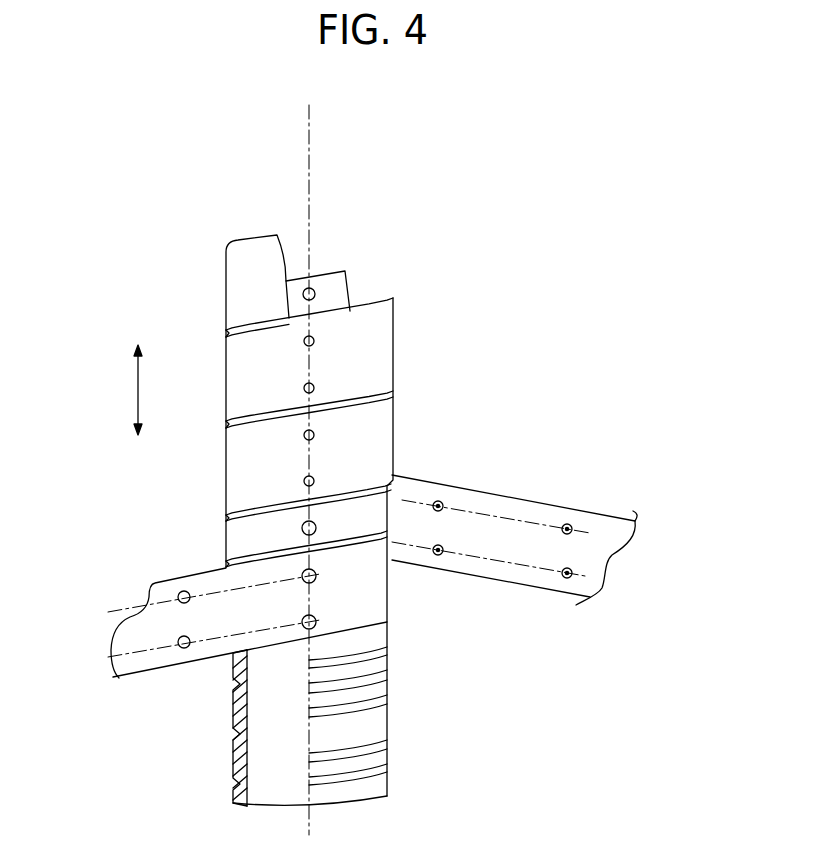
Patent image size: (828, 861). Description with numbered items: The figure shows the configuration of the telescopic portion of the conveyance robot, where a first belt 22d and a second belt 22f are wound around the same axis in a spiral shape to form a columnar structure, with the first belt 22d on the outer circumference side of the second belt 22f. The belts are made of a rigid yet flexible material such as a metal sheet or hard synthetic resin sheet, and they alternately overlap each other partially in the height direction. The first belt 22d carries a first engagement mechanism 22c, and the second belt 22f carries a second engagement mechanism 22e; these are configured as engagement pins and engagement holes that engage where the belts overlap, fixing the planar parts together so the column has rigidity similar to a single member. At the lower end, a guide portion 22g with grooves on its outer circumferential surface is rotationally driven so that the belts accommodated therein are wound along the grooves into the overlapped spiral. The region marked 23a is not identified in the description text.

The spiral roller body 23a is at (178, 277).
The first engagement mechanism 22c is at (315, 341).
The first belt 22d is at (530, 520).
The second engagement mechanism 22e is at (302, 528).
The second belt 22f is at (215, 645).
The guide portion 22g is at (233, 757).